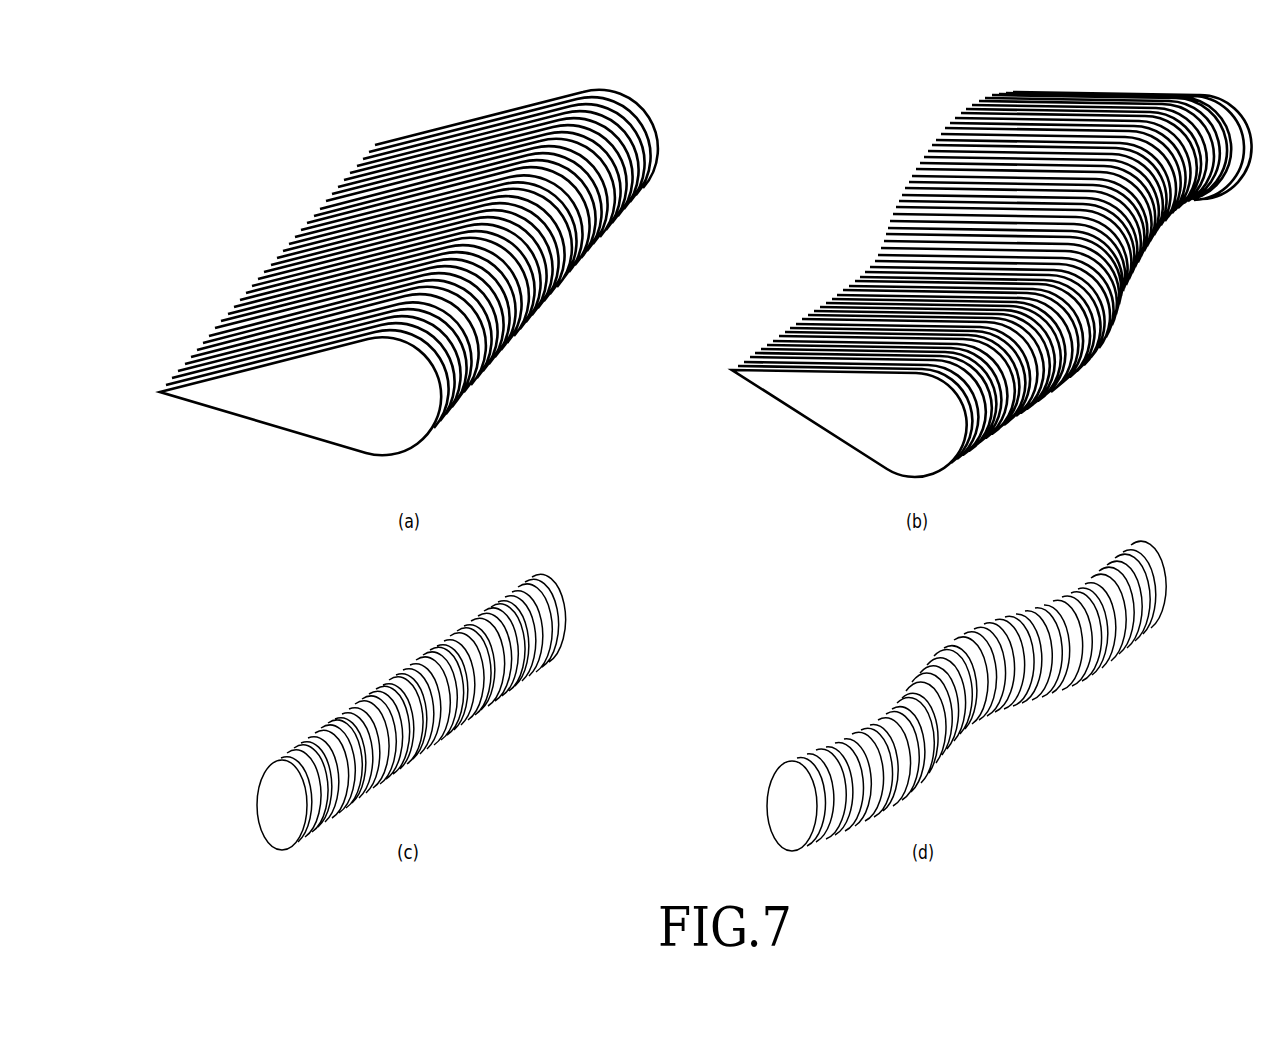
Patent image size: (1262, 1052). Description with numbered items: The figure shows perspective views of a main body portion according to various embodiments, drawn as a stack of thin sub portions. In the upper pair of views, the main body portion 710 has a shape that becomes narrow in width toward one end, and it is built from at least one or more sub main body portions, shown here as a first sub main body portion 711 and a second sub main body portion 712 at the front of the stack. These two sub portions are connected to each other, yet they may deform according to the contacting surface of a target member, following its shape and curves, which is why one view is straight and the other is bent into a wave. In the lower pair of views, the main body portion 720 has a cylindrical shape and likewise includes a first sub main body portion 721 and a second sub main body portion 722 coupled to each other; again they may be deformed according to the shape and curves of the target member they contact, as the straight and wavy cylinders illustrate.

The main body portion 710 is at (706, 279).
The first sub main body portion 711 is at (466, 384).
The second sub main body portion 712 is at (474, 372).
The main body portion 720 is at (711, 716).
The first sub main body portion 721 is at (318, 828).
The second sub main body portion 722 is at (323, 828).